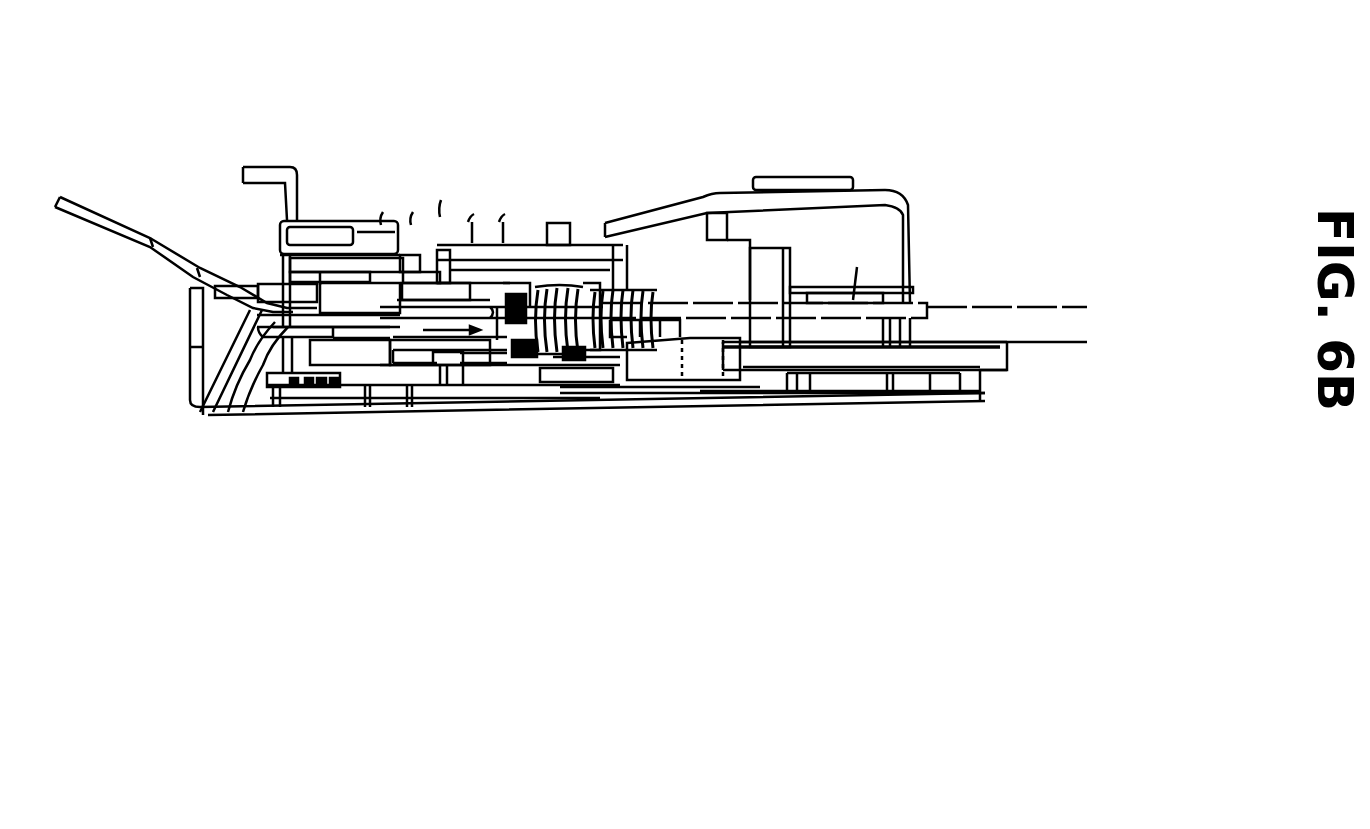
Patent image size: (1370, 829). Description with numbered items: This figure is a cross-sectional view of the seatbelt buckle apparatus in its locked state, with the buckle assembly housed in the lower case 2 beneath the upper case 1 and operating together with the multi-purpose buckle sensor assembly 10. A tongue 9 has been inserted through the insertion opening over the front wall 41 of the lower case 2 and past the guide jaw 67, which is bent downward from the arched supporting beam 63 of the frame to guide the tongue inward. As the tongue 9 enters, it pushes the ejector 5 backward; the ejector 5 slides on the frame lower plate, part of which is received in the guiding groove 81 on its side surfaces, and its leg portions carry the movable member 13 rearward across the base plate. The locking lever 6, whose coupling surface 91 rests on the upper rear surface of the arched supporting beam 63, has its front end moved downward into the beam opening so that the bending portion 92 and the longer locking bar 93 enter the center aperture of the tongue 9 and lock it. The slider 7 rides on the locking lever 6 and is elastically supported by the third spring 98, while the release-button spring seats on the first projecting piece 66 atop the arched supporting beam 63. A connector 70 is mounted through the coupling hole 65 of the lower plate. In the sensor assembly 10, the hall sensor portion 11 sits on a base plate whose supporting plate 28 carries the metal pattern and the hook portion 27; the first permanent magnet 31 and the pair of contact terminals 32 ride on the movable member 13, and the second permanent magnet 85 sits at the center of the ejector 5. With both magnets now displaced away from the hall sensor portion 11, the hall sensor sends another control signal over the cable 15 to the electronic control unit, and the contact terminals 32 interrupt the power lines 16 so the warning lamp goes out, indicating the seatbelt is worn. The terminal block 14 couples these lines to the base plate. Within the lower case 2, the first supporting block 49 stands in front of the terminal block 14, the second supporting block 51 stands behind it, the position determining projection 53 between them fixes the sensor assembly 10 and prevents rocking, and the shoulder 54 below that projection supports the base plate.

The upper case 1 is at (660, 203).
The lower case 2 is at (200, 418).
The ejector 5 is at (535, 270).
The locking lever 6 is at (520, 227).
The slider 7 is at (328, 213).
The tongue 9 is at (86, 200).
The multi-purpose buckle sensor assembly 10 is at (405, 385).
The hall sensor portion 11 is at (360, 372).
The movable member 13 is at (467, 355).
The terminal block 14 is at (680, 362).
The cable 15 is at (880, 416).
The power lines 16 is at (992, 373).
The hook portion 27 is at (307, 340).
The supporting plate 28 is at (585, 370).
The first permanent magnet 31 is at (530, 357).
The contact terminals 32 is at (545, 357).
The front wall 41 is at (190, 343).
The first supporting block 49 is at (547, 368).
The second supporting block 51 is at (718, 375).
The position determining projection 53 is at (620, 365).
The shoulder 54 is at (627, 383).
The arched supporting beam 63 is at (300, 213).
The coupling hole 65 is at (860, 262).
The first projecting piece 66 is at (270, 173).
The guide jaw 67 is at (220, 413).
The connector 70 is at (1010, 317).
The guiding groove 81 is at (502, 345).
The second permanent magnet 85 is at (492, 227).
The coupling surface 91 is at (272, 278).
The bending portion 92 is at (283, 275).
The locking bar 93 is at (280, 290).
The third spring 98 is at (443, 223).